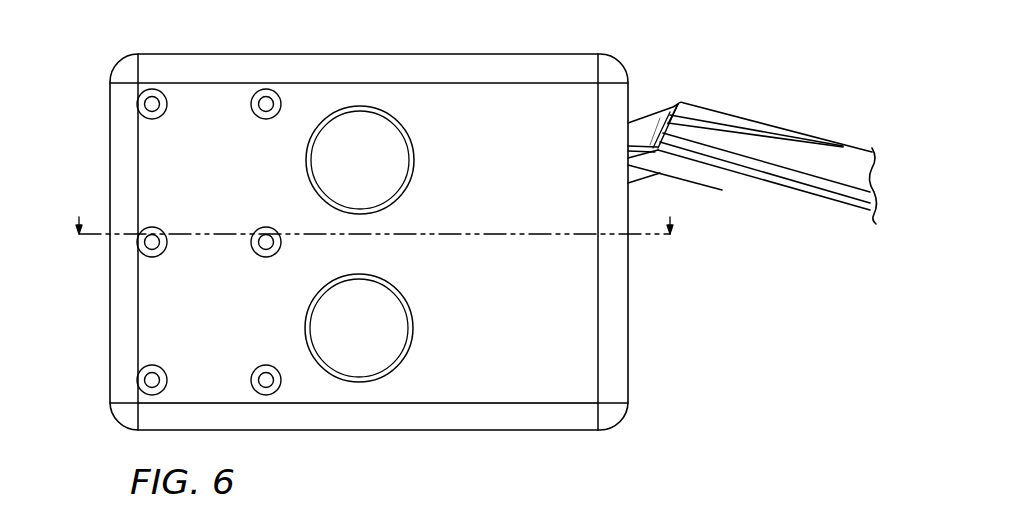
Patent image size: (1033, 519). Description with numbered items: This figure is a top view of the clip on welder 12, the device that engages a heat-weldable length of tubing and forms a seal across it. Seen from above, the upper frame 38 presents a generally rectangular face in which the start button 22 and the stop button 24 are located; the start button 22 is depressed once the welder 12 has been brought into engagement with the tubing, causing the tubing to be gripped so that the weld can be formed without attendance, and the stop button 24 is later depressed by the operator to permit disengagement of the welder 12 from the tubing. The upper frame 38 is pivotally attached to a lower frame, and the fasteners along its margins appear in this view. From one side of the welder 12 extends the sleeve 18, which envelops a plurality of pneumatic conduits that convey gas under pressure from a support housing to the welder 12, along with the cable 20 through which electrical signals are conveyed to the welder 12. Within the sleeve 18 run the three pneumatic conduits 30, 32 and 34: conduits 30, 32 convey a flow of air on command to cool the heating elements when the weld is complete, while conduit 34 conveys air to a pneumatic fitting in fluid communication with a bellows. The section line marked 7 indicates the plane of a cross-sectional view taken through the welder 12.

The section line 7- 7 is at (373, 211).
The clip on welder 12 is at (567, 370).
The sleeve 18 is at (820, 196).
The cable 20 is at (638, 120).
The start button 22 is at (390, 146).
The stop button 24 is at (385, 318).
The pneumatic conduit 30 is at (678, 162).
The pneumatic conduit 32 is at (638, 156).
The pneumatic conduit 34 is at (648, 140).
The upper frame 38 is at (473, 380).